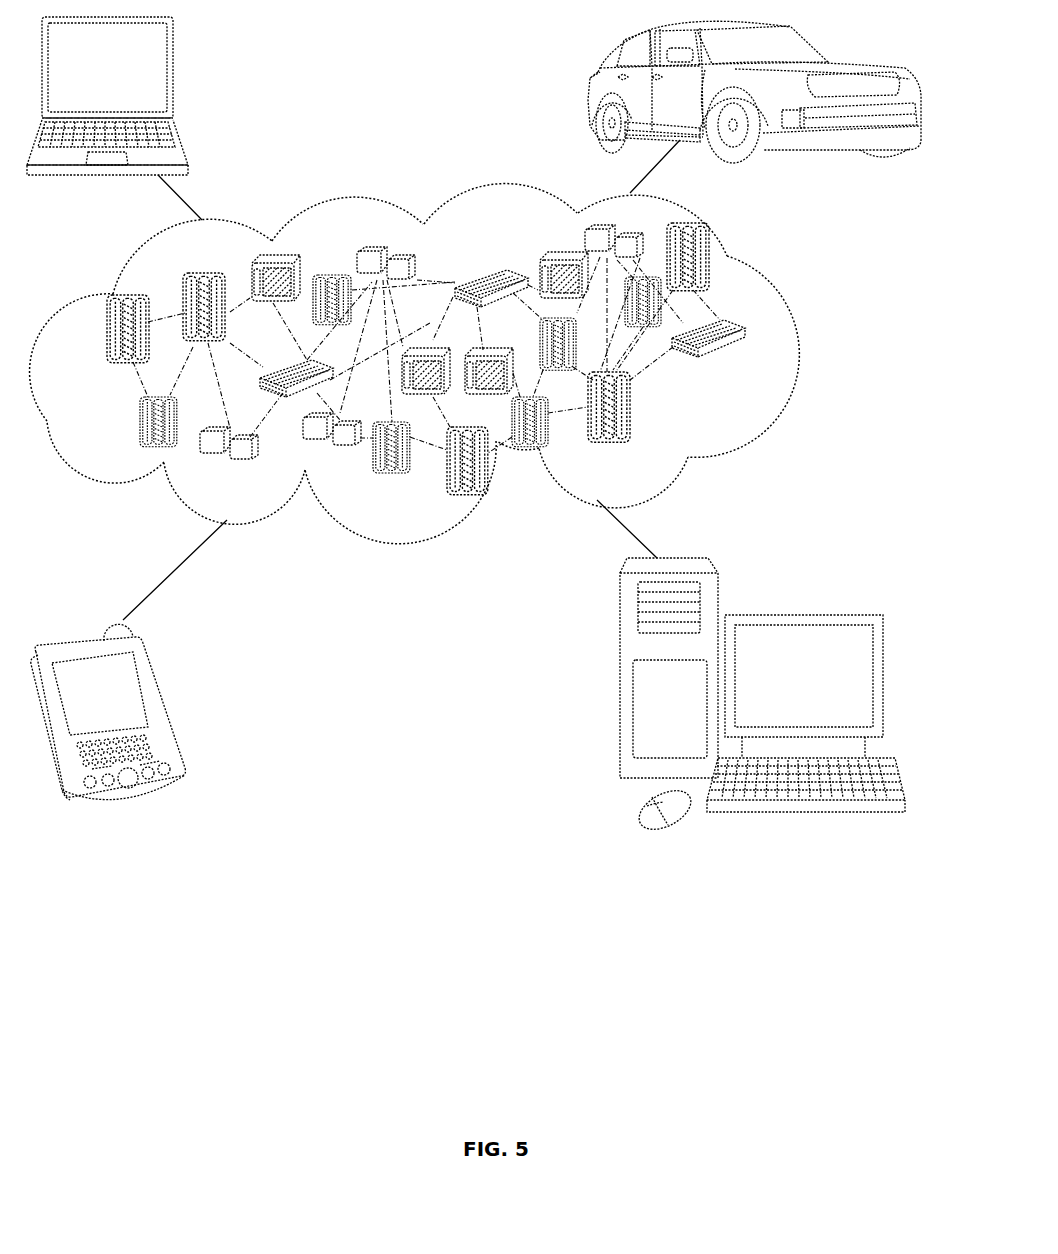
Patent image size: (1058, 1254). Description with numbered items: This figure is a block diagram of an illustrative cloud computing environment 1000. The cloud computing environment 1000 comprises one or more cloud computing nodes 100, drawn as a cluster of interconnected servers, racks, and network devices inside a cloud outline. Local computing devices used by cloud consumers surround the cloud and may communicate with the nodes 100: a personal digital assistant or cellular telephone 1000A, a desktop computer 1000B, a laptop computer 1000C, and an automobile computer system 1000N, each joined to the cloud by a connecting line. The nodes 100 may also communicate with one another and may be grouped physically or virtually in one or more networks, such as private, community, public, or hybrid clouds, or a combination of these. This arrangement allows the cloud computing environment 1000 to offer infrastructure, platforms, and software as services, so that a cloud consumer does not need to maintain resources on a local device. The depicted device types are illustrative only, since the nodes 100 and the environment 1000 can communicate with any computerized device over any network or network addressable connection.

The cloud computing nodes 100 is at (747, 366).
The cloud computing environment 1000 is at (803, 340).
The personal digital assistant (PDA) or cellular telephone 1000A is at (166, 702).
The desktop computer 1000B is at (812, 590).
The laptop computer 1000C is at (174, 80).
The automobile computer system 1000N is at (590, 93).